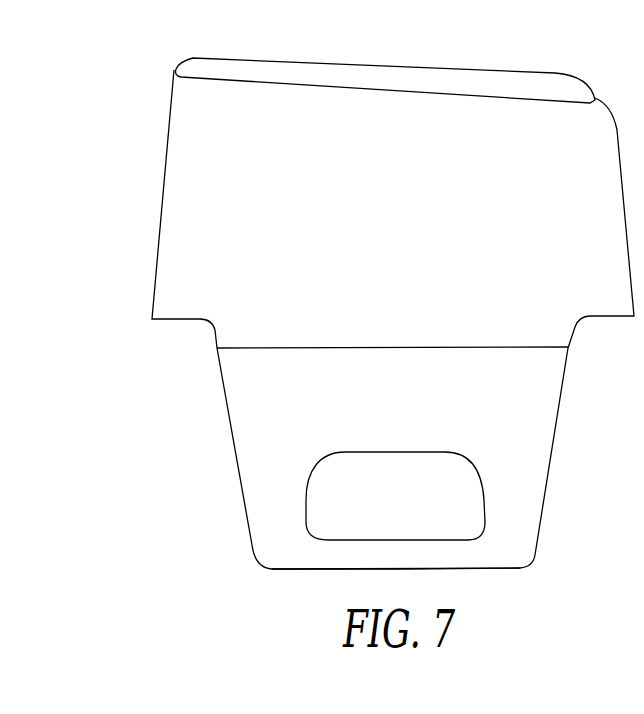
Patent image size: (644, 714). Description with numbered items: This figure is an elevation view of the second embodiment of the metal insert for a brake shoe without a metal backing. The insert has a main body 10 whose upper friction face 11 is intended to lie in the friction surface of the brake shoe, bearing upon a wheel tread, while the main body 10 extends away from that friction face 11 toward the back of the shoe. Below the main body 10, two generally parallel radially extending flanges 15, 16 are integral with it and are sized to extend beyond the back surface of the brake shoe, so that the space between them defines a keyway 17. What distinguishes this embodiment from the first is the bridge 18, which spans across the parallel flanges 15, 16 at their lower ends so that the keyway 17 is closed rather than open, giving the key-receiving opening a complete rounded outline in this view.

The main body 10 is at (397, 232).
The friction face 11 is at (448, 68).
The radially extending flange 15 is at (537, 420).
The radially extending flange 16 is at (246, 421).
The keyway 17 is at (380, 463).
The bridge 18 is at (463, 552).